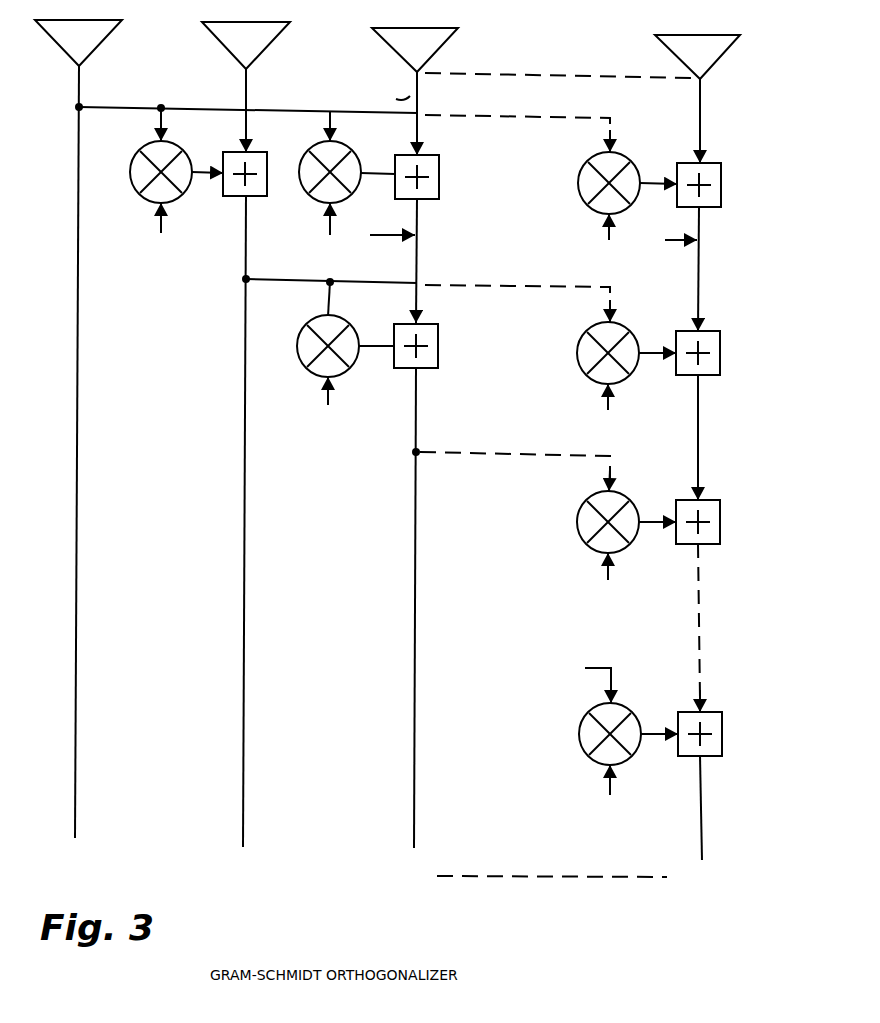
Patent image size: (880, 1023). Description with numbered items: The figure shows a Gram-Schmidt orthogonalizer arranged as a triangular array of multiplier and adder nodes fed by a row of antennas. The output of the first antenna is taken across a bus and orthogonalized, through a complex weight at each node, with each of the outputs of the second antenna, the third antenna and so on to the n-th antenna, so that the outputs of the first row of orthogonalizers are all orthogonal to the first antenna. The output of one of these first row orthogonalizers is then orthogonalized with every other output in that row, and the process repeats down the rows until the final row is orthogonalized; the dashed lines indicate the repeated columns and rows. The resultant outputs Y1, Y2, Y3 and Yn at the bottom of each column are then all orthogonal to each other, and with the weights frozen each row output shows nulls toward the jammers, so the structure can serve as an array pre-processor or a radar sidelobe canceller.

The first resultant output Y1 is at (62, 870).
The second resultant output Y2 is at (251, 897).
The third resultant output Y3 is at (535, 880).
The n-th resultant output Yn is at (696, 895).